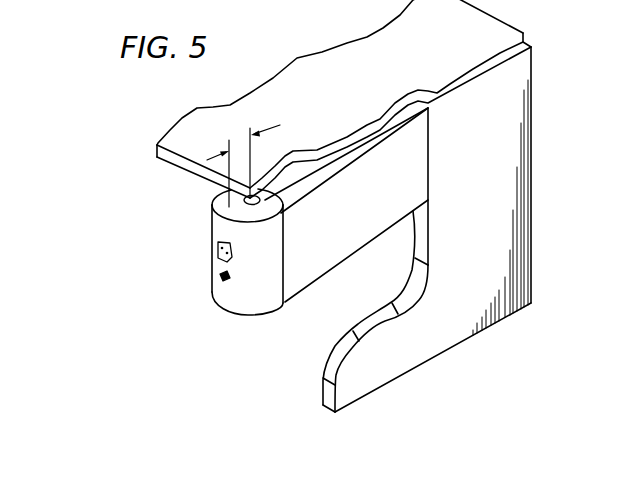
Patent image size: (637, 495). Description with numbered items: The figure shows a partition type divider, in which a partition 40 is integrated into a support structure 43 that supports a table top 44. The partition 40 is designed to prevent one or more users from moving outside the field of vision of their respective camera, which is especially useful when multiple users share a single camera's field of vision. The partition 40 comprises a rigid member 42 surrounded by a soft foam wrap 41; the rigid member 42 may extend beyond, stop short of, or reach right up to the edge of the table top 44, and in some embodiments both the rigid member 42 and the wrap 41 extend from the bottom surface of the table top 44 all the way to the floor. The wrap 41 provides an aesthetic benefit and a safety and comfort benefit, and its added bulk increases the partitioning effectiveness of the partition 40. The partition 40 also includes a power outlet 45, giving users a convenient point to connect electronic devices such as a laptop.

The partition 40 is at (160, 319).
The soft foam wrap 41 is at (224, 302).
The rigid member 42 is at (259, 199).
The support structure 43 is at (463, 333).
The table top 44 is at (322, 52).
The power outlet 45 is at (216, 250).